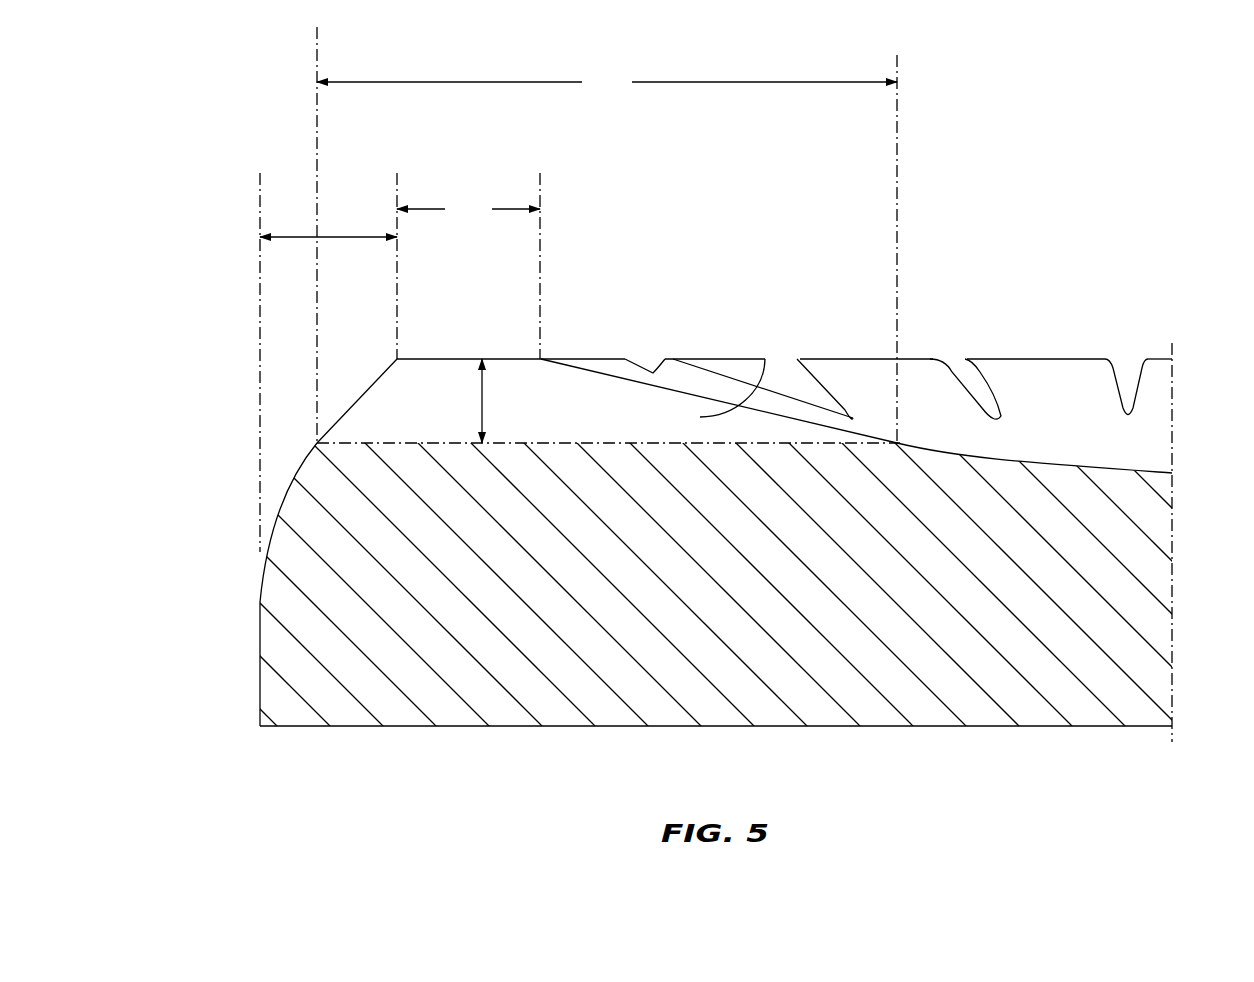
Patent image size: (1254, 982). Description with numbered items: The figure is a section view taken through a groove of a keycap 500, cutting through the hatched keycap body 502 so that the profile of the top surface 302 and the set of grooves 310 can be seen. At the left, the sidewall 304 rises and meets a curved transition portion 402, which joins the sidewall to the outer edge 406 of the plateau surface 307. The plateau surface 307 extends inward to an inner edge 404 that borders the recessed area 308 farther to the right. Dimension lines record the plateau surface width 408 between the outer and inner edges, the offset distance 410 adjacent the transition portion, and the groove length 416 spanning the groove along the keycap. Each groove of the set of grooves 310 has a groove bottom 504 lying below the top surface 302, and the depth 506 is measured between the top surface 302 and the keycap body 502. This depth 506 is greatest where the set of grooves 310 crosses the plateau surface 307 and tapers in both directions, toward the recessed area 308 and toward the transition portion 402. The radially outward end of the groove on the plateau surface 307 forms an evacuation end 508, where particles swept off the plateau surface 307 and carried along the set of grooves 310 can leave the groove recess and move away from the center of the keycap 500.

The keycap 500 is at (190, 296).
The groove length 416 is at (607, 82).
The offset distance 410 is at (354, 235).
The plateau surface width 408 is at (468, 209).
The evacuation end 508 is at (368, 380).
The outer edge 406 is at (398, 357).
The plateau surface 307 is at (507, 357).
The inner edge 404 is at (542, 358).
The transition portion 402 is at (302, 465).
The depth 506 is at (482, 403).
The groove bottom 504 is at (551, 443).
The set of grooves 310 is at (803, 376).
The top surface 302 is at (1070, 465).
The recessed area 308 is at (1135, 443).
The keycap body 502 is at (1130, 590).
The sidewall 304 is at (260, 682).